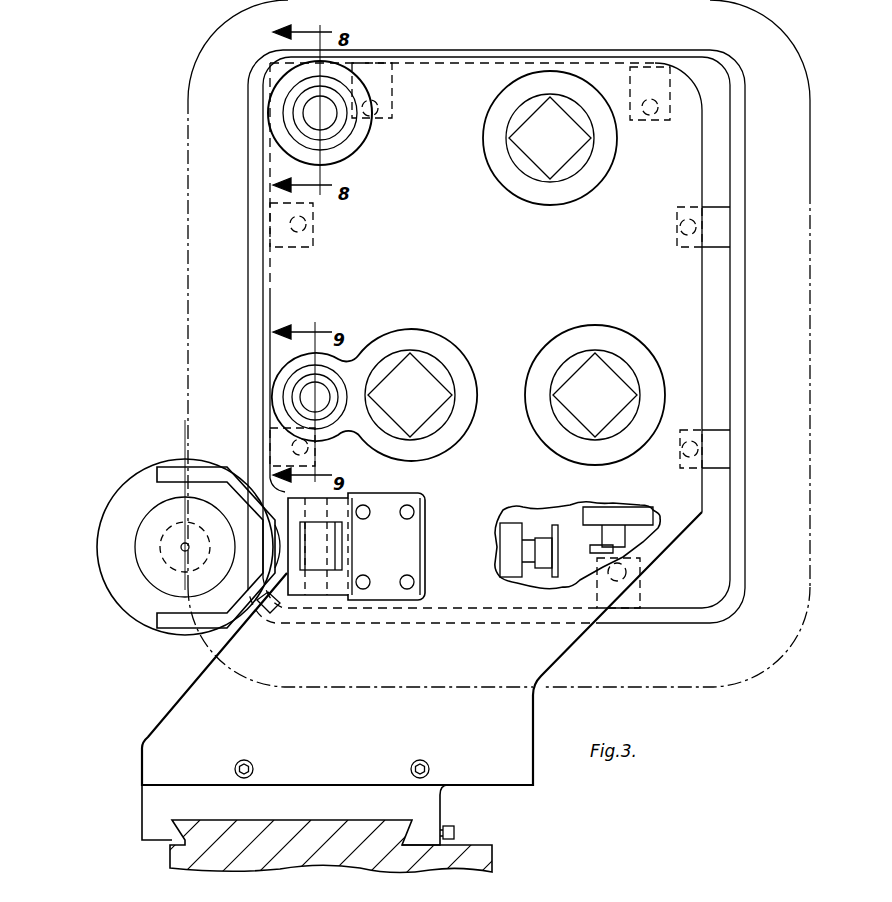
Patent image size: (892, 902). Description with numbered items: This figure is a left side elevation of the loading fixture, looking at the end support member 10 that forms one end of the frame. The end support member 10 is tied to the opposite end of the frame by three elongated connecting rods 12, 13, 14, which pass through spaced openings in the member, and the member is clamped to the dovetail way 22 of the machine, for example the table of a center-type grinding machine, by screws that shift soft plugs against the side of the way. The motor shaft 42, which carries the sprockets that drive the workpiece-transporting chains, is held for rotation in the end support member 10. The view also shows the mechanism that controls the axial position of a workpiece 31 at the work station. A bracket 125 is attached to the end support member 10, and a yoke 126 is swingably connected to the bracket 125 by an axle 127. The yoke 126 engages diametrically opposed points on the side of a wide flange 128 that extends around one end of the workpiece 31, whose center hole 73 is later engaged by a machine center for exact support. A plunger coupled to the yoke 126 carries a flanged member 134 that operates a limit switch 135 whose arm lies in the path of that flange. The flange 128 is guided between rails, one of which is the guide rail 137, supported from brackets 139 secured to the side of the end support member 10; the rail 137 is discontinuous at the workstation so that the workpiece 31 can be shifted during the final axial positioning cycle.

The end support member 10 is at (505, 284).
The connecting rod 12 is at (421, 405).
The connecting rod 13 is at (606, 405).
The connecting rod 14 is at (561, 148).
The dovetail way 22 is at (275, 826).
The workpiece 31 is at (140, 568).
The motor shaft 42 is at (333, 125).
The center hole 73 is at (183, 547).
The bracket 125 is at (423, 525).
The yoke 126 is at (236, 466).
The axle 127 is at (328, 550).
The wide flange 128 is at (133, 472).
The flanged member 134 is at (560, 537).
The limit switch 135 is at (605, 533).
The guide rail 137 is at (745, 335).
The bracket 139 is at (702, 470).